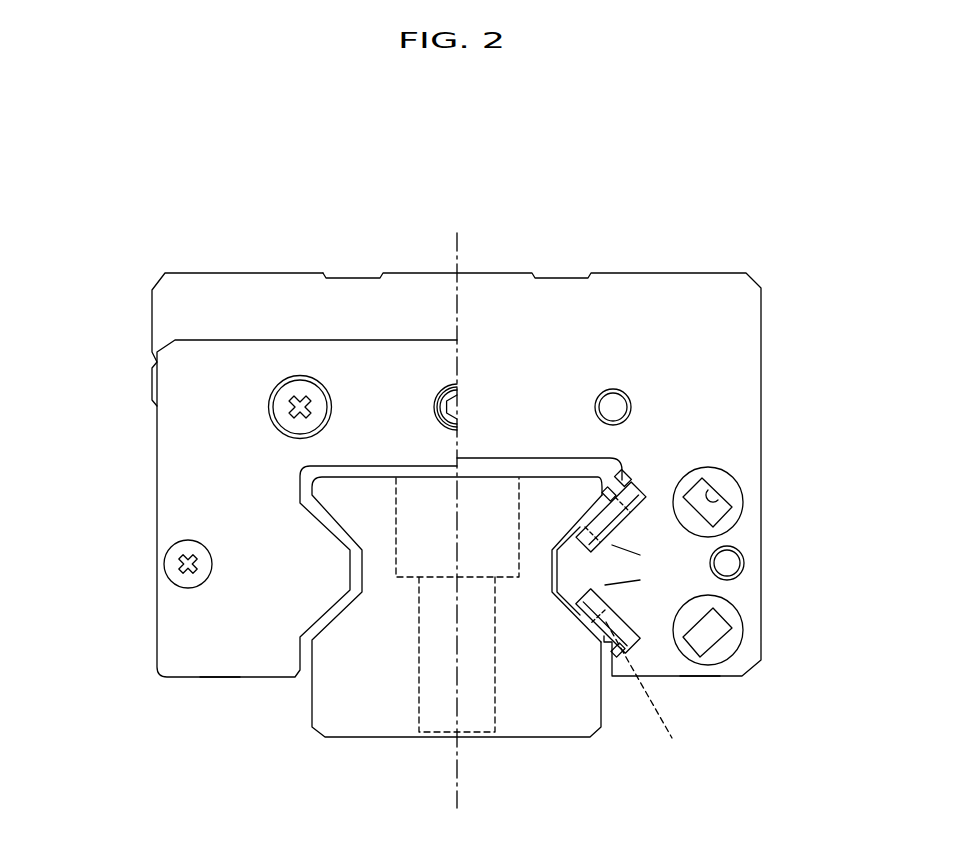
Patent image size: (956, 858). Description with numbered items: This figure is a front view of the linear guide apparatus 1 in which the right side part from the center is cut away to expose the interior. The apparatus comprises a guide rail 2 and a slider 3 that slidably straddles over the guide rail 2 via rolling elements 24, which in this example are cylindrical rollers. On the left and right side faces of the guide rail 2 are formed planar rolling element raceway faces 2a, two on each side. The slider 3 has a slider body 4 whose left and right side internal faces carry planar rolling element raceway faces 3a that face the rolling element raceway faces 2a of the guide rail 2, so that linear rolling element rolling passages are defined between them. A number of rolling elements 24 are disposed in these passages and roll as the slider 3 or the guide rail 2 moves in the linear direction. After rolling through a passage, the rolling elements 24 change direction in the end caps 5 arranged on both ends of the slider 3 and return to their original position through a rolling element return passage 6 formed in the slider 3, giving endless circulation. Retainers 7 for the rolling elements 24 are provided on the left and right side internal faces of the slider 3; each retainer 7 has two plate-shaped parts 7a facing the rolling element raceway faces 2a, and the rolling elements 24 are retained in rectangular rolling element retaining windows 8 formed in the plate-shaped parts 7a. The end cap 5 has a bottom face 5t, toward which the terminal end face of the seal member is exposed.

The linear guide apparatus 1 is at (409, 239).
The guide rail 2 is at (357, 718).
The rolling element raceway face 2a is at (577, 535).
The slider 3 is at (763, 322).
The rolling element raceway face 3a is at (612, 545).
The slider body 4 is at (632, 295).
The end cap 5 is at (185, 513).
The bottom face 5t is at (218, 678).
The rolling element return passage 6 is at (722, 498).
The retainer 7 is at (568, 572).
The plate-shaped part 7a is at (640, 502).
The rolling element retaining window 8 is at (645, 696).
The rolling element 24 is at (608, 502).